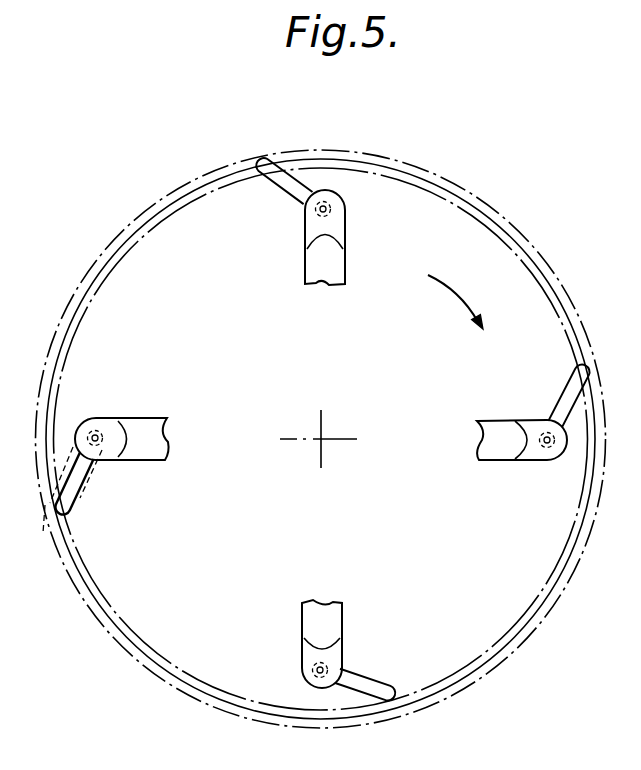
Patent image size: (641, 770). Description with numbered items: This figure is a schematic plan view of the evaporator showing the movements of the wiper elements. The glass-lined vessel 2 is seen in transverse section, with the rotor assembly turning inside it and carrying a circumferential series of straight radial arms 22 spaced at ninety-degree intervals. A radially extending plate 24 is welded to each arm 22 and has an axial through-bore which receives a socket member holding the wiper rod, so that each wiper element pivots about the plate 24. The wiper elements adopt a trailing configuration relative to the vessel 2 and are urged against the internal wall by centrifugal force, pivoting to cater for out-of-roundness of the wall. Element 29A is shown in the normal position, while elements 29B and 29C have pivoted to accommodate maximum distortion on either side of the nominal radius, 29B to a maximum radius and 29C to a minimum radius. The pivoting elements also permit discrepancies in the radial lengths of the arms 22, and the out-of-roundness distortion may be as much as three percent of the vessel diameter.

The vessel 2 is at (108, 257).
The radial arm 22 is at (318, 270).
The radially extending plate 24 is at (337, 225).
The wiper element in normal position 29A is at (574, 392).
The wiper element pivoted to maximum radius 29B is at (280, 177).
The wiper element pivoted to minimum radius 29C is at (387, 688).